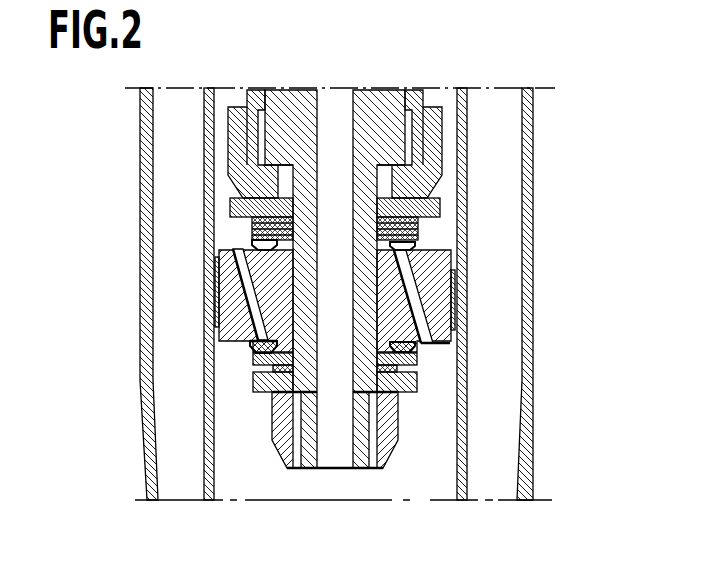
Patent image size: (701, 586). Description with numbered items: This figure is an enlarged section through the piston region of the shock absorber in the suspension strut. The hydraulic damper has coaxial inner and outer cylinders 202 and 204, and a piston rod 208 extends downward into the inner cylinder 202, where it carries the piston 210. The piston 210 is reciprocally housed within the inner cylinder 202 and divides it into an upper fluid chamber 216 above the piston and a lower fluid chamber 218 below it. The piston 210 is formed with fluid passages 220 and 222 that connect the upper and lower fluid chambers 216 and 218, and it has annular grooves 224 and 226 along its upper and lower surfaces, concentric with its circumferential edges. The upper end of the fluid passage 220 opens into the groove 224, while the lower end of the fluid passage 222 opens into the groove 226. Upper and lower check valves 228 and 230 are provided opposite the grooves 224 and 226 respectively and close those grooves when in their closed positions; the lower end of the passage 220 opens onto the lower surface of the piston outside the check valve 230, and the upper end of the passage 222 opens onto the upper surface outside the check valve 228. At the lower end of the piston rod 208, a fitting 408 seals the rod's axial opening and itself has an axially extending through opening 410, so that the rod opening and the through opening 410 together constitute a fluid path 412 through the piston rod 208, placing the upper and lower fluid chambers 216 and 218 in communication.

The inner cylinder 202 is at (536, 158).
The outer cylinder 204 is at (468, 230).
The piston rod 208 is at (252, 98).
The piston 210 is at (222, 336).
The upper fluid chamber 216 is at (447, 103).
The lower fluid chamber 218 is at (430, 495).
The fluid passage 220 is at (420, 307).
The fluid passage 222 is at (248, 288).
The annular groove 224 is at (253, 242).
The annular groove 226 is at (253, 348).
The upper check valve 228 is at (252, 222).
The lower check valve 230 is at (422, 363).
The fitting 408 is at (398, 118).
The through opening 410 is at (317, 407).
The fluid path 412 is at (340, 84).